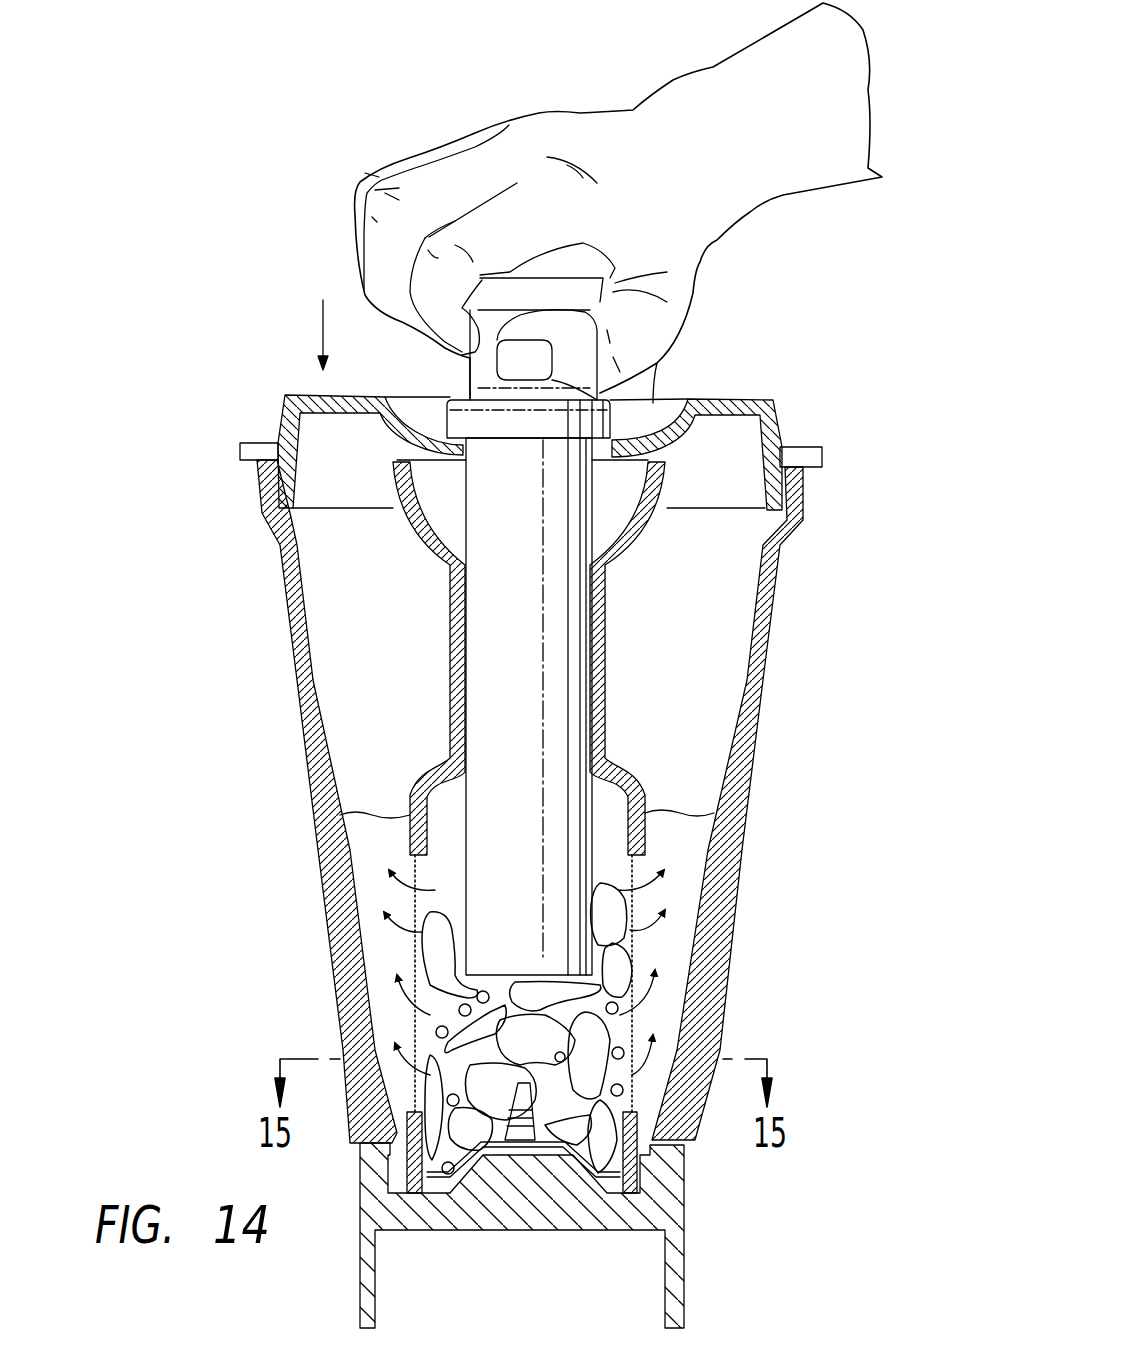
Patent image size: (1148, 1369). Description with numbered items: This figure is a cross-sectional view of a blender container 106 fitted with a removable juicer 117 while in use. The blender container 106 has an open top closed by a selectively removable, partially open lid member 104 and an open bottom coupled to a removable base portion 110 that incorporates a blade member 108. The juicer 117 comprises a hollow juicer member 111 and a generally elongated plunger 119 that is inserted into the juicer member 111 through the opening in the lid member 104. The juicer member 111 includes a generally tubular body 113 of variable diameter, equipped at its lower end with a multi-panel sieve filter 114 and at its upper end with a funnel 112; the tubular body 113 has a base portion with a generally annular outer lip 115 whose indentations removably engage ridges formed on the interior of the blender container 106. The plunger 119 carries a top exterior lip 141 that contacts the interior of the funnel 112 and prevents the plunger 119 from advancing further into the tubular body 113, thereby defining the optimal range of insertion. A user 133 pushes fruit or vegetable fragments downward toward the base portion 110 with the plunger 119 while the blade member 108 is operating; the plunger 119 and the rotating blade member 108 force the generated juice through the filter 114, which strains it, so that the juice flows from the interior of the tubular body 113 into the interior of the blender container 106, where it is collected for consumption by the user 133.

The user 133 is at (740, 103).
The lid member 104 is at (650, 422).
The top exterior lip 141 is at (467, 427).
The plunger 119 is at (527, 480).
The funnel 112 is at (660, 493).
The tubular body 113 is at (605, 596).
The juicer 117 is at (642, 707).
The juicer member 111 is at (450, 655).
The blender container 106 is at (737, 790).
The multi-panel sieve filter 114 is at (415, 940).
The annular outer lip 115 is at (402, 1110).
The blade member 108 is at (517, 1112).
The base portion 110 is at (685, 1238).